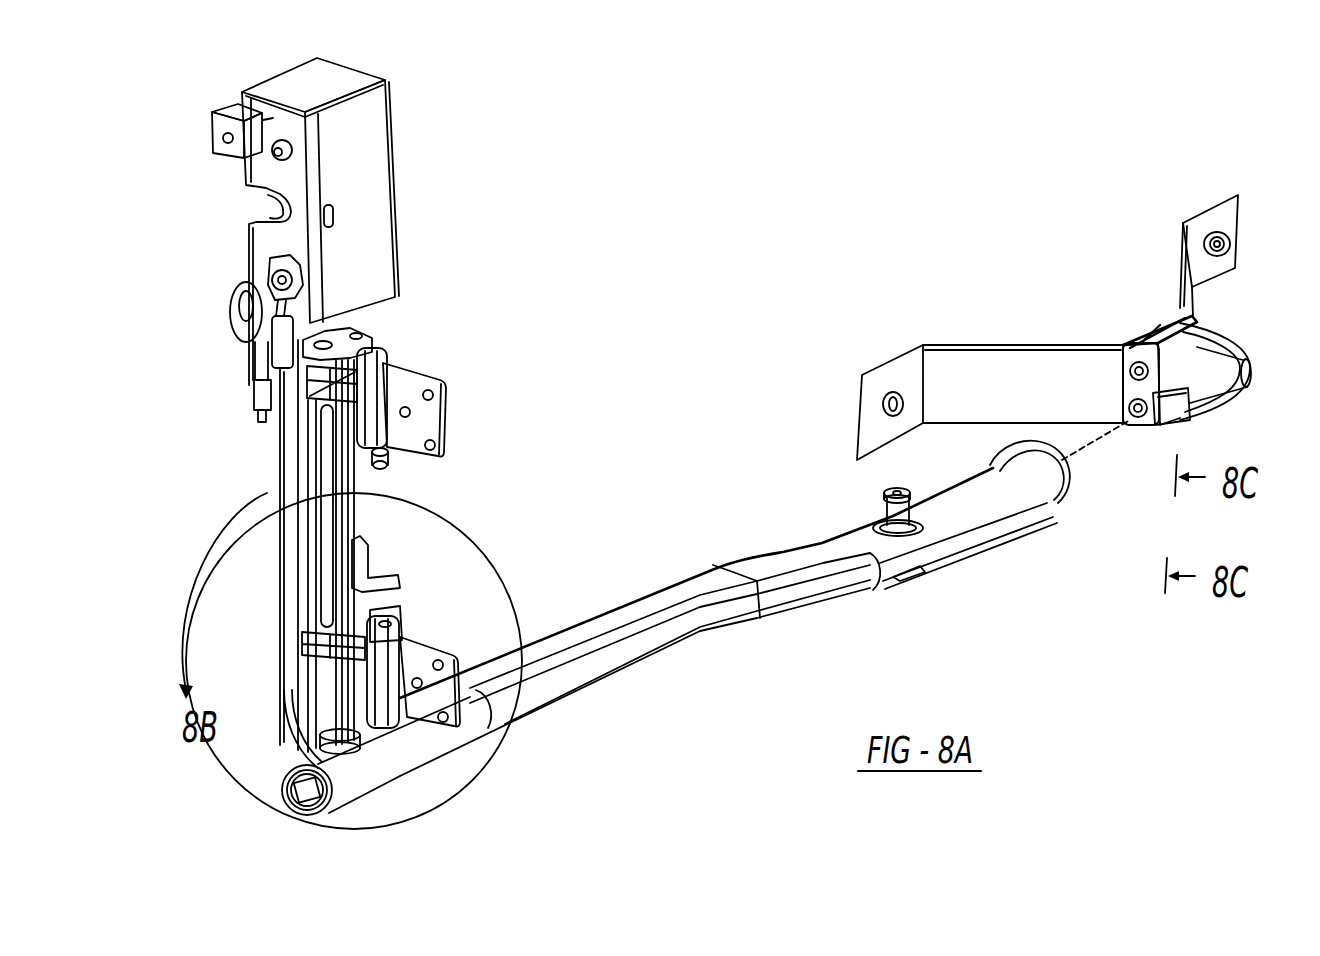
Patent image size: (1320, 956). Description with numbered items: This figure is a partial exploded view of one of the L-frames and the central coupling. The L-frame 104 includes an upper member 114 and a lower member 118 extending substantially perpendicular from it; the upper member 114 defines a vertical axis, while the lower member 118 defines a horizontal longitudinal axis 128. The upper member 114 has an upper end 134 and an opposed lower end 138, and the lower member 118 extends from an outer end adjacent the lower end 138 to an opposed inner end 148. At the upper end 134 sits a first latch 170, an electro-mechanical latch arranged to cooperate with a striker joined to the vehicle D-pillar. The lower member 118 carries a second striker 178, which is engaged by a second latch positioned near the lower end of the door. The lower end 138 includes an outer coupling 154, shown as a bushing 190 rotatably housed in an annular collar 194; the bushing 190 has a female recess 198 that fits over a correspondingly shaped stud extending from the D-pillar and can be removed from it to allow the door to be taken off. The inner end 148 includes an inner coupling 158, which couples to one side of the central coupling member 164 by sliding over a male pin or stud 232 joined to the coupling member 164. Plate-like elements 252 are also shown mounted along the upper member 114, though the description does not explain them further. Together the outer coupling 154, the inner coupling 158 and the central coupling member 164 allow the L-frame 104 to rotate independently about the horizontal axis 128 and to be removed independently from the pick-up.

The L-frame 104 is at (614, 548).
The upper member 114 is at (288, 450).
The lower member 118 is at (633, 673).
The horizontal longitudinal axis 128 is at (1097, 448).
The upper end 134 is at (246, 84).
The lower end 138 is at (345, 794).
The inner end 148 is at (1052, 480).
The outer coupling 154 is at (353, 822).
The inner coupling 158 is at (1060, 478).
The central coupling member 164 is at (1008, 318).
The first latch 170 is at (368, 156).
The second striker 178 is at (870, 505).
The bushing 190 is at (295, 785).
The annular collar 194 is at (317, 762).
The recess 198 is at (303, 788).
The stud 232 is at (1246, 362).
The hinge plate 252 is at (407, 387).